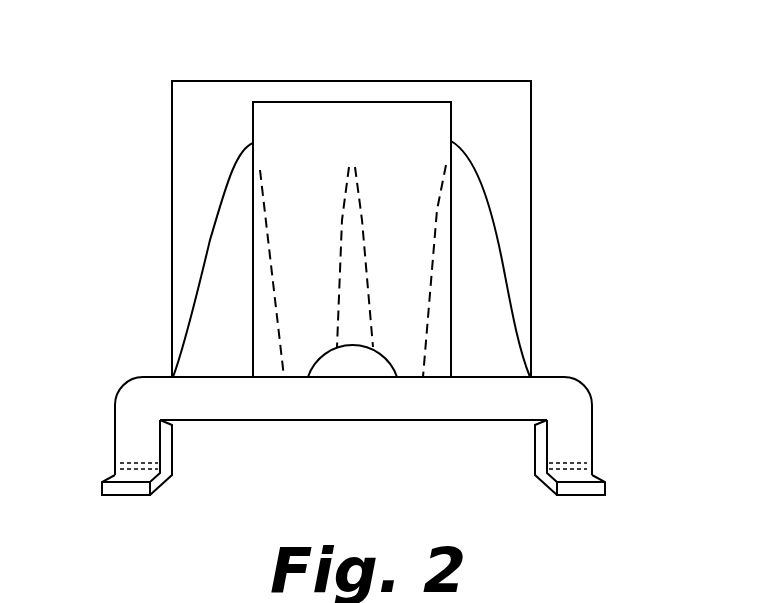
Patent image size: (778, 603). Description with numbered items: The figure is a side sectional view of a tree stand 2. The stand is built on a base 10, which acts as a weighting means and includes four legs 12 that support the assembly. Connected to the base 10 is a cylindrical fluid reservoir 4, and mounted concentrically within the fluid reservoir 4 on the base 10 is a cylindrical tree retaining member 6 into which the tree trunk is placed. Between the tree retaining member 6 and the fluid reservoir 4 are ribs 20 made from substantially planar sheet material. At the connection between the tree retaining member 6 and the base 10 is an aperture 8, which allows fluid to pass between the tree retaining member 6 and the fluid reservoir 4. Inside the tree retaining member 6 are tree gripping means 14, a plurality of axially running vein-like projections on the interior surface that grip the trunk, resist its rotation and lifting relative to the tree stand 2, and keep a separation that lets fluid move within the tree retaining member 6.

The tree stand 2 is at (549, 270).
The fluid reservoir 4 is at (172, 123).
The tree retaining member 6 is at (252, 117).
The aperture 8 is at (343, 360).
The base 10 is at (148, 376).
The legs 12 is at (138, 438).
The tree gripping means 14 is at (265, 200).
The ribs 20 is at (223, 170).